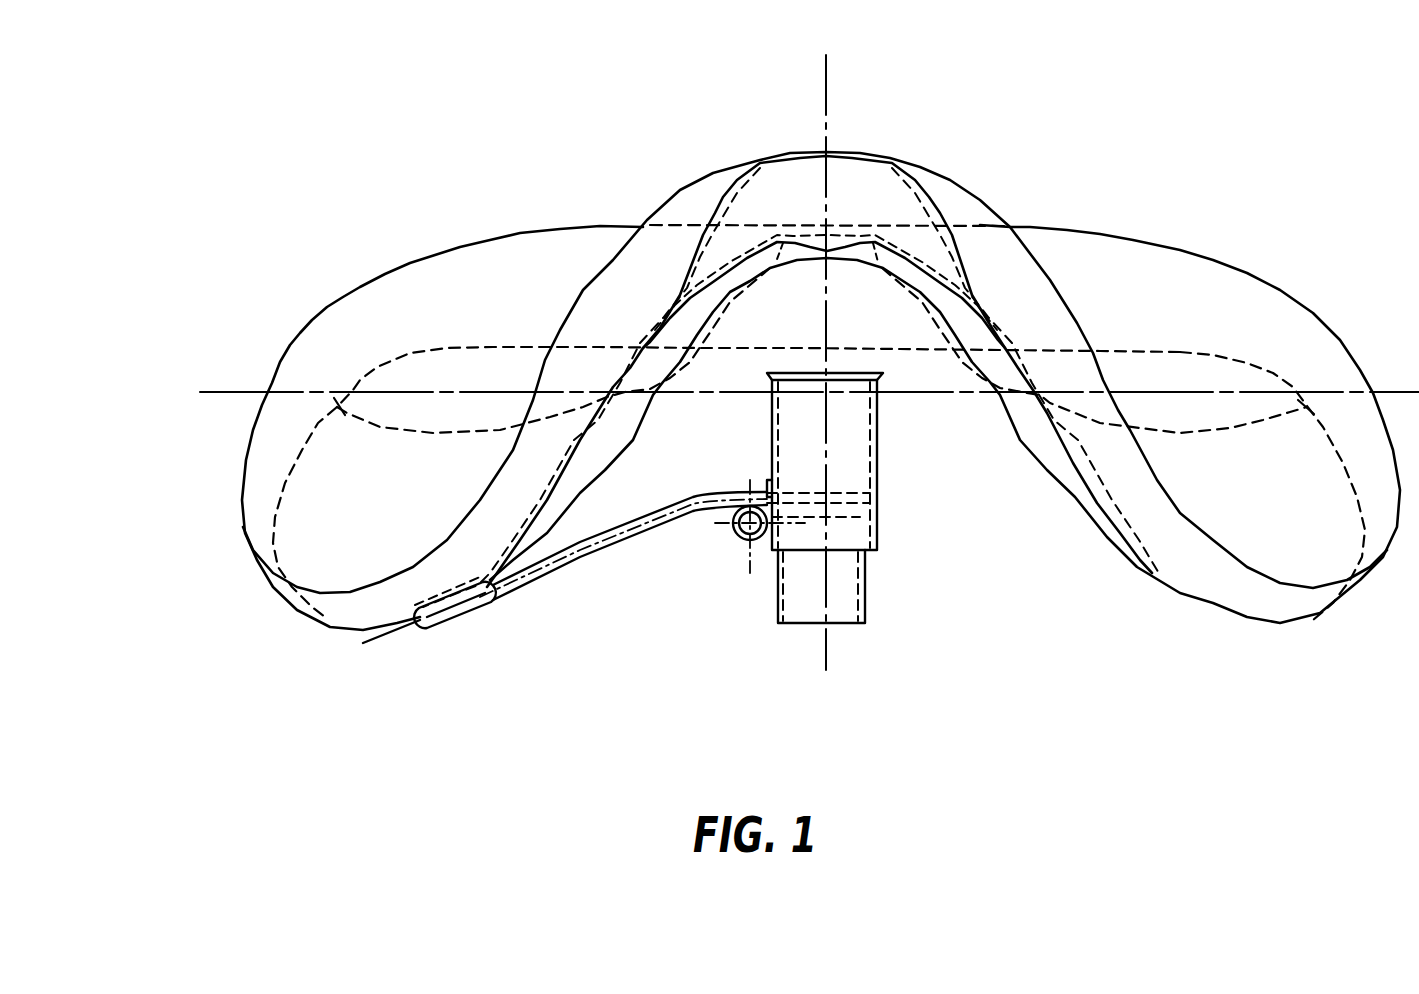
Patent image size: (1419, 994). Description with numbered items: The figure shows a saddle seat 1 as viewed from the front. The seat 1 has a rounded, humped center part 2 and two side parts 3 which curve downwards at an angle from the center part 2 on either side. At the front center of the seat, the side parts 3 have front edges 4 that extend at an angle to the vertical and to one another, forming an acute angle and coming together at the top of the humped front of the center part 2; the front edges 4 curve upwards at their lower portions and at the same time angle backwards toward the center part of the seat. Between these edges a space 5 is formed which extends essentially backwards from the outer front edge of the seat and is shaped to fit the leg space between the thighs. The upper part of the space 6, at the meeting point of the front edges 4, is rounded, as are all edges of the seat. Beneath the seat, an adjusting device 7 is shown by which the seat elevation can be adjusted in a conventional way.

The saddle seat 1 is at (1097, 191).
The center part 2 is at (946, 195).
The side parts 3 is at (337, 557).
The front edges 4 is at (623, 290).
The space 5 is at (810, 332).
The upper part of the space 6 is at (823, 167).
The adjusting device 7 is at (703, 507).